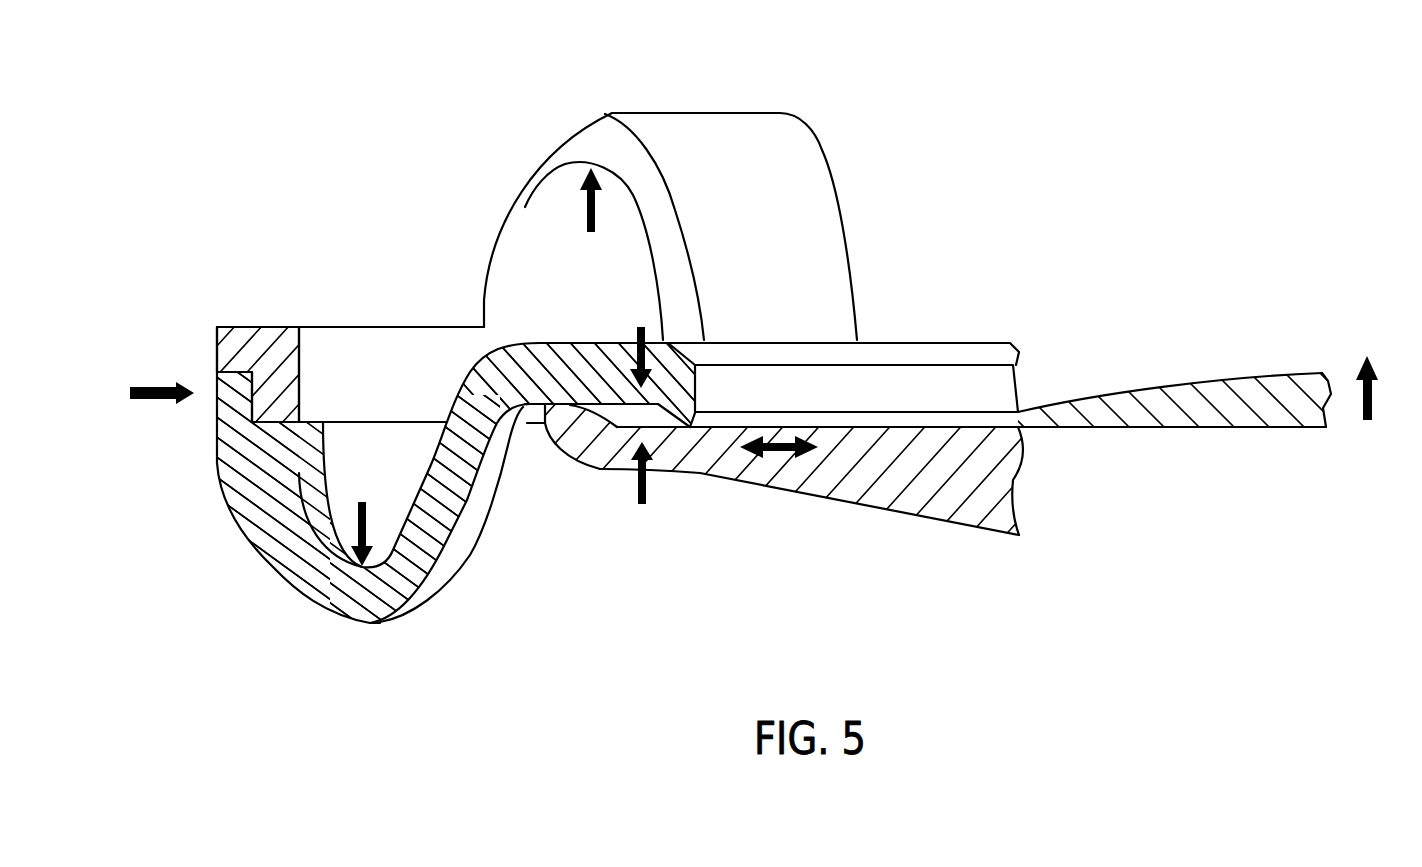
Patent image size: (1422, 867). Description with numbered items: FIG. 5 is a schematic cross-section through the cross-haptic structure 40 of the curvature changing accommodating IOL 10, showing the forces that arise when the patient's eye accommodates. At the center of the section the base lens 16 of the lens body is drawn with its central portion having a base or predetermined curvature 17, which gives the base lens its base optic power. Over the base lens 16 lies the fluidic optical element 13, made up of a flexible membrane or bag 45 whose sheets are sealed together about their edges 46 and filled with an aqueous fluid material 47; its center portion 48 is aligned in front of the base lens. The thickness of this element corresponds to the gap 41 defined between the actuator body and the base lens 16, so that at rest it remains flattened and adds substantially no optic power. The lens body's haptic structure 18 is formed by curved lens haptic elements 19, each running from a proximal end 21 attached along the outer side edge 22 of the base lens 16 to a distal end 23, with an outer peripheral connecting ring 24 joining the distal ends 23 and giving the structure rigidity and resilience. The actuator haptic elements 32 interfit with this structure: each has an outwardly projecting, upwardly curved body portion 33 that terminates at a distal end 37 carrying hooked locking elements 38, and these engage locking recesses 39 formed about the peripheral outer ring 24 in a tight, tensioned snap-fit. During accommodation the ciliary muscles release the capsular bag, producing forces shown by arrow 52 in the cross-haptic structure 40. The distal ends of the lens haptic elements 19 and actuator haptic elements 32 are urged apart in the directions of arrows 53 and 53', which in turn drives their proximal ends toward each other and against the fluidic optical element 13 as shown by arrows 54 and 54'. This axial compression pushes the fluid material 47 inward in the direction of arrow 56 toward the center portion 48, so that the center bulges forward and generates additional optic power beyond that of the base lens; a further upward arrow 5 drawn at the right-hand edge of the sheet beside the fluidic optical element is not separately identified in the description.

The upward force arrow 5 is at (1373, 403).
The accommodating IOL 10 is at (292, 686).
The fluidic optical element 13 is at (1000, 430).
The base lens 16 is at (908, 527).
The base curvature 17 is at (977, 517).
The haptic structure 18 is at (807, 149).
The lens haptic elements 19 is at (725, 127).
The proximal end 21 is at (820, 341).
The outer side edge 22 is at (935, 342).
The distal end 23 is at (416, 327).
The outer peripheral connecting ring 24 is at (300, 325).
The actuator haptic elements 32 is at (222, 510).
The body portion 33 is at (218, 490).
The distal end 37 is at (216, 425).
The hooked locking elements 38 is at (217, 372).
The locking recesses 39 is at (216, 326).
The cross-haptic structure 40 is at (578, 489).
The gap 41 is at (723, 416).
The membrane 45 is at (1268, 373).
The edges 46 is at (993, 432).
The aqueous fluid material 47 is at (1270, 410).
The center portion 48 is at (1323, 373).
The force arrow 52 is at (156, 390).
The force arrow 53 is at (493, 200).
The force arrow 53' is at (273, 551).
The force arrow 54 is at (781, 282).
The force arrow 54' is at (595, 519).
The fluid flow arrow 56 is at (774, 452).